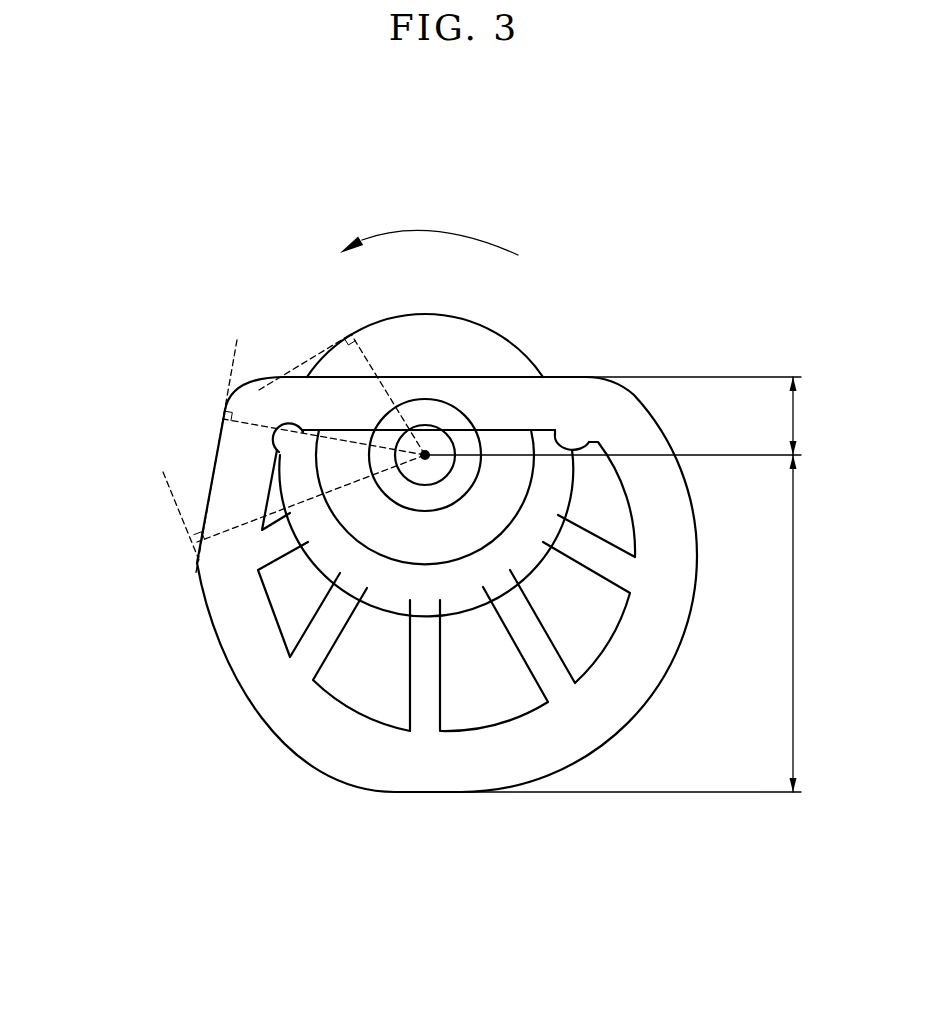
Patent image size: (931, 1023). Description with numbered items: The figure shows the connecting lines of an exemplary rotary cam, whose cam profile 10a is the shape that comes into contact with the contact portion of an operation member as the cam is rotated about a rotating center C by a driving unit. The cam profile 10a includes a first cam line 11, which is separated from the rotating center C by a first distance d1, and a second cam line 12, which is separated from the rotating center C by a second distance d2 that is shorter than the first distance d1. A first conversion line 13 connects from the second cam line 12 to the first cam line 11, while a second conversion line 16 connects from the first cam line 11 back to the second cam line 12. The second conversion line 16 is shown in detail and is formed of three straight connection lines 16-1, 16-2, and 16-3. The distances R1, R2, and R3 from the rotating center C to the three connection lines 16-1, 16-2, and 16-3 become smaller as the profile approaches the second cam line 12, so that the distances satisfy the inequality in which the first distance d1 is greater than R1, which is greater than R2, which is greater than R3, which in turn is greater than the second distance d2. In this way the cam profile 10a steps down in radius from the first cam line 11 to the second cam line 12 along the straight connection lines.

The cam profile 10a is at (712, 580).
The first cam line 11 is at (428, 794).
The second cam line 12 is at (555, 377).
The first conversion line 13 is at (657, 690).
The second conversion line 16 is at (216, 574).
The connection line 16-1 is at (241, 677).
The connection line 16-2 is at (211, 490).
The connection line 16-3 is at (243, 381).
The rotating center C is at (430, 450).
The distance R1 is at (294, 507).
The distance R2 is at (310, 458).
The distance R3 is at (342, 394).
The first distance d1 is at (646, 623).
The second distance d2 is at (628, 416).